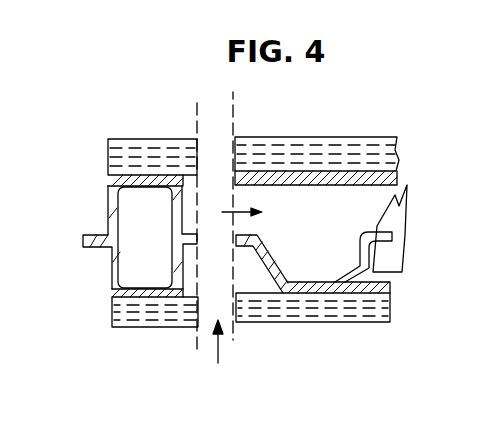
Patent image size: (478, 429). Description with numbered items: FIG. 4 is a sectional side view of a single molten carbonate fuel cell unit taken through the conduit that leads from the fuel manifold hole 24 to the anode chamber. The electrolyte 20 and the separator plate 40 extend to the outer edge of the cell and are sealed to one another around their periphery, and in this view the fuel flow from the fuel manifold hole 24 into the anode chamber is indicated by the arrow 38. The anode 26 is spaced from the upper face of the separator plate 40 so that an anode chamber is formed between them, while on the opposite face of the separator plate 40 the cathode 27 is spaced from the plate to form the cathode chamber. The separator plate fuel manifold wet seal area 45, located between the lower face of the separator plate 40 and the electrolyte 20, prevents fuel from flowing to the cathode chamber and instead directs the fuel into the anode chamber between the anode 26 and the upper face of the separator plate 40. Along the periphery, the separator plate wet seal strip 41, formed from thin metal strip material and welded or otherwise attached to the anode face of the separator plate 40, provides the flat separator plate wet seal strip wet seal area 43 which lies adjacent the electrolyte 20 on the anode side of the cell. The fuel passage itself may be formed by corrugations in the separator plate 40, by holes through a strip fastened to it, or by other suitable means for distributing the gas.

The electrolyte 20 is at (131, 145).
The separator plate wet seal strip wet seal area 43 is at (156, 178).
The separator plate wet seal strip 41 is at (108, 196).
The arrow 38 is at (222, 212).
The fuel manifold hole 24 is at (218, 352).
The anode 26 is at (357, 176).
The cathode 27 is at (390, 280).
The separator plate fuel manifold wet seal area 45 is at (303, 293).
The separator plate 40 is at (408, 185).